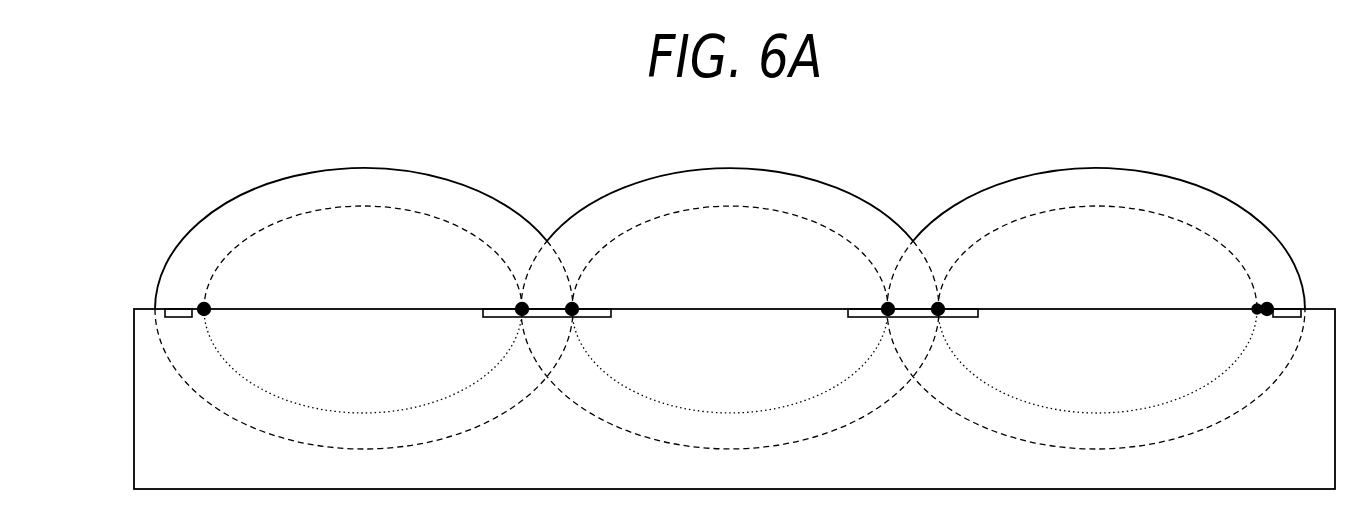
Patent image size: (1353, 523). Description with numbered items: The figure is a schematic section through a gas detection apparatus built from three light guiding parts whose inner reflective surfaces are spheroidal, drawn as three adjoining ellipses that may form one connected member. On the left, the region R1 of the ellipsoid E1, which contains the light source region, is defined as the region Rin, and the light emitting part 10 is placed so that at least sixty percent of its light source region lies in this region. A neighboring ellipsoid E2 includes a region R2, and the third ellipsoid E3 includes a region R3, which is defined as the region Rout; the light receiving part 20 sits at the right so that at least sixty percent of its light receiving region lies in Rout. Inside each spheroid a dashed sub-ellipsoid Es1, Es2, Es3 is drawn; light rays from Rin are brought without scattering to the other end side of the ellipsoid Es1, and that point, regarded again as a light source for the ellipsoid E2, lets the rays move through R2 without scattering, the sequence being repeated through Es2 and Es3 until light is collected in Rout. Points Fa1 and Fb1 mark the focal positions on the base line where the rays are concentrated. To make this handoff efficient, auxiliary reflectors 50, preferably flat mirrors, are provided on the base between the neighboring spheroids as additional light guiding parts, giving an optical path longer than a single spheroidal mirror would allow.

The light emitting part 10 is at (182, 318).
The light receiving part 20 is at (1277, 318).
The auxiliary reflector 50 is at (590, 318).
The ellipsoid E1 is at (364, 283).
The neighboring ellipsoid E2 is at (730, 291).
The ellipsoid E3 is at (1096, 283).
The region R1 is at (210, 183).
The region R2 is at (783, 187).
The region R3 is at (973, 170).
The ellipsoid Es1 is at (400, 208).
The ellipsoid Es2 is at (792, 212).
The ellipsoid Es3 is at (1167, 215).
The first feed point Fa1 is at (210, 301).
The second feed point Fb1 is at (517, 306).